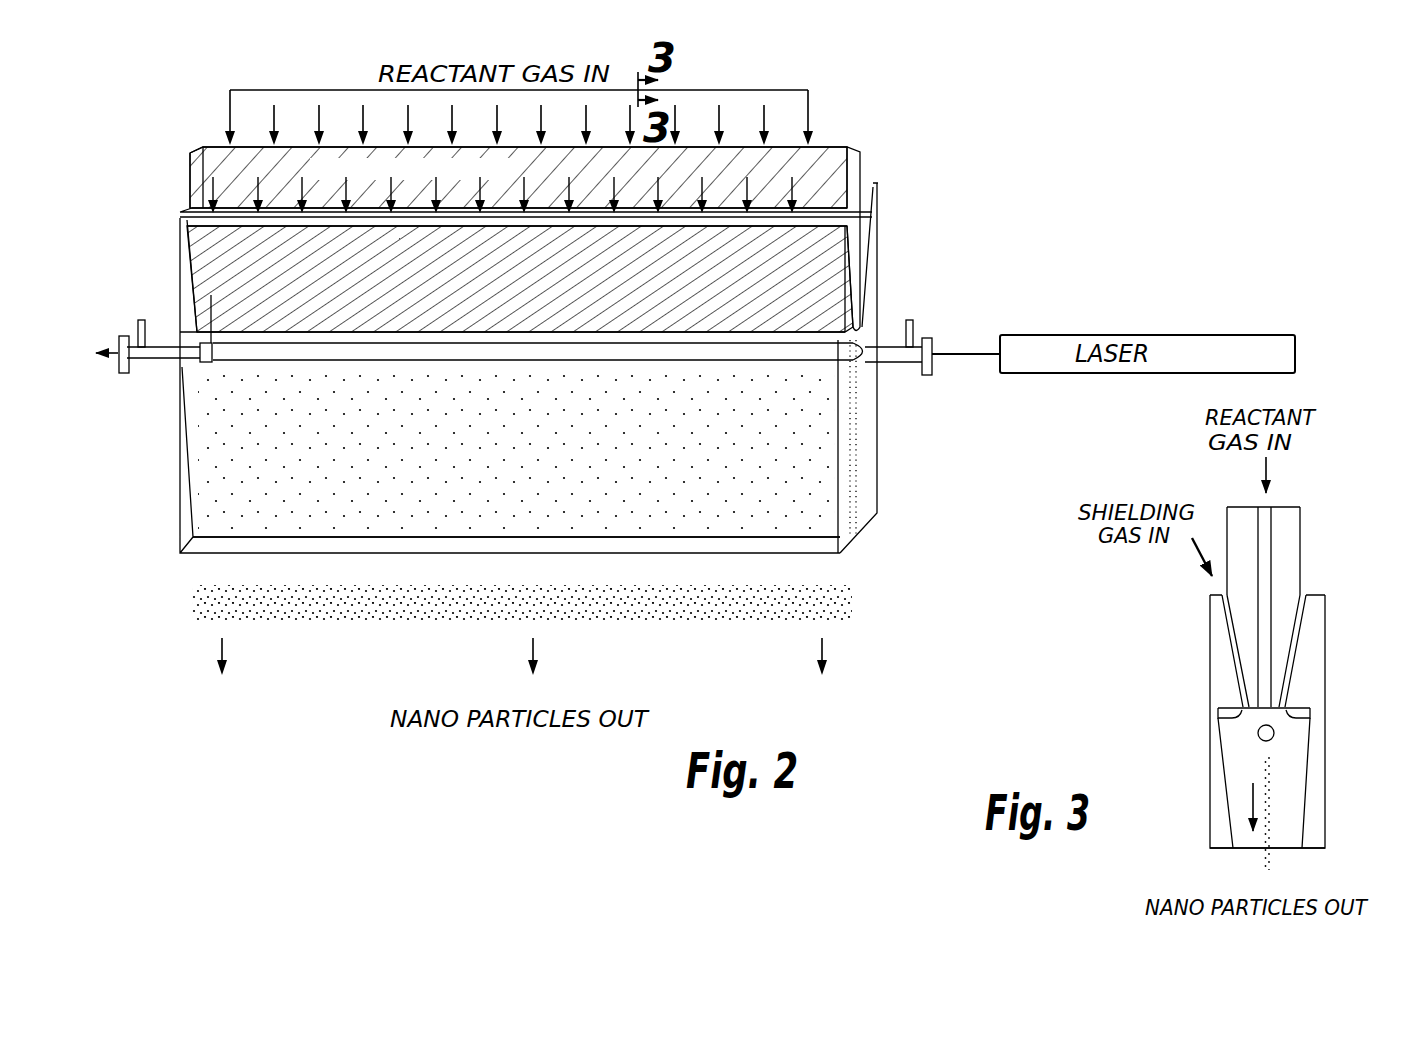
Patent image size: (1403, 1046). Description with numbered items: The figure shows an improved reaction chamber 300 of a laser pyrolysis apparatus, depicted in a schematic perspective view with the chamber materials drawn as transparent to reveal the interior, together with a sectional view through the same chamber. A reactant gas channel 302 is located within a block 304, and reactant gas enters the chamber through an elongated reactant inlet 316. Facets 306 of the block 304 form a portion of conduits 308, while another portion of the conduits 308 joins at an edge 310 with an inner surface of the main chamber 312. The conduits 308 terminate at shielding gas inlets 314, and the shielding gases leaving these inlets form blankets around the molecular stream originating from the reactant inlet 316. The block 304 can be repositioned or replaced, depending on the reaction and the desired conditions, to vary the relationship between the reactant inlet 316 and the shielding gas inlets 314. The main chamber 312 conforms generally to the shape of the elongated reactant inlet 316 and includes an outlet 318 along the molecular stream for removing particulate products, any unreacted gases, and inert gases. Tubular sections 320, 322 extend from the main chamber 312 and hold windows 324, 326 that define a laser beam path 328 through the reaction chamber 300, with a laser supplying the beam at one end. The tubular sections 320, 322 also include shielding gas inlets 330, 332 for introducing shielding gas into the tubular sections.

In FIG. 2, the reaction chamber 300 is at (140, 202).
In FIG. 3, the reaction chamber 300 is at (1185, 677).
In FIG. 2, the reactant gas channel 302 is at (828, 147).
In FIG. 3, the reactant gas channel 302 is at (1268, 507).
In FIG. 2, the block 304 is at (879, 200).
In FIG. 3, the block 304 is at (1302, 521).
In FIG. 3, the facets 306 is at (1218, 605).
In FIG. 2, the conduits 308 is at (802, 208).
In FIG. 3, the conduits 308 is at (1227, 622).
In FIG. 3, the edge 310 is at (1312, 712).
In FIG. 2, the main chamber 312 is at (863, 417).
In FIG. 3, the main chamber 312 is at (1237, 792).
In FIG. 3, the shielding gas inlets 314 is at (1232, 722).
In FIG. 2, the elongated reactant inlet 316 is at (877, 322).
In FIG. 3, the elongated reactant inlet 316 is at (1258, 712).
In FIG. 2, the outlet 318 is at (823, 535).
In FIG. 3, the outlet 318 is at (1260, 857).
In FIG. 2, the tubular section 320 is at (895, 366).
In FIG. 2, the tubular section 322 is at (148, 370).
In FIG. 2, the window 324 is at (935, 341).
In FIG. 2, the window 326 is at (118, 365).
In FIG. 2, the laser beam path 328 is at (185, 385).
In FIG. 2, the shielding gas inlet 330 is at (915, 322).
In FIG. 2, the shielding gas inlet 332 is at (140, 320).